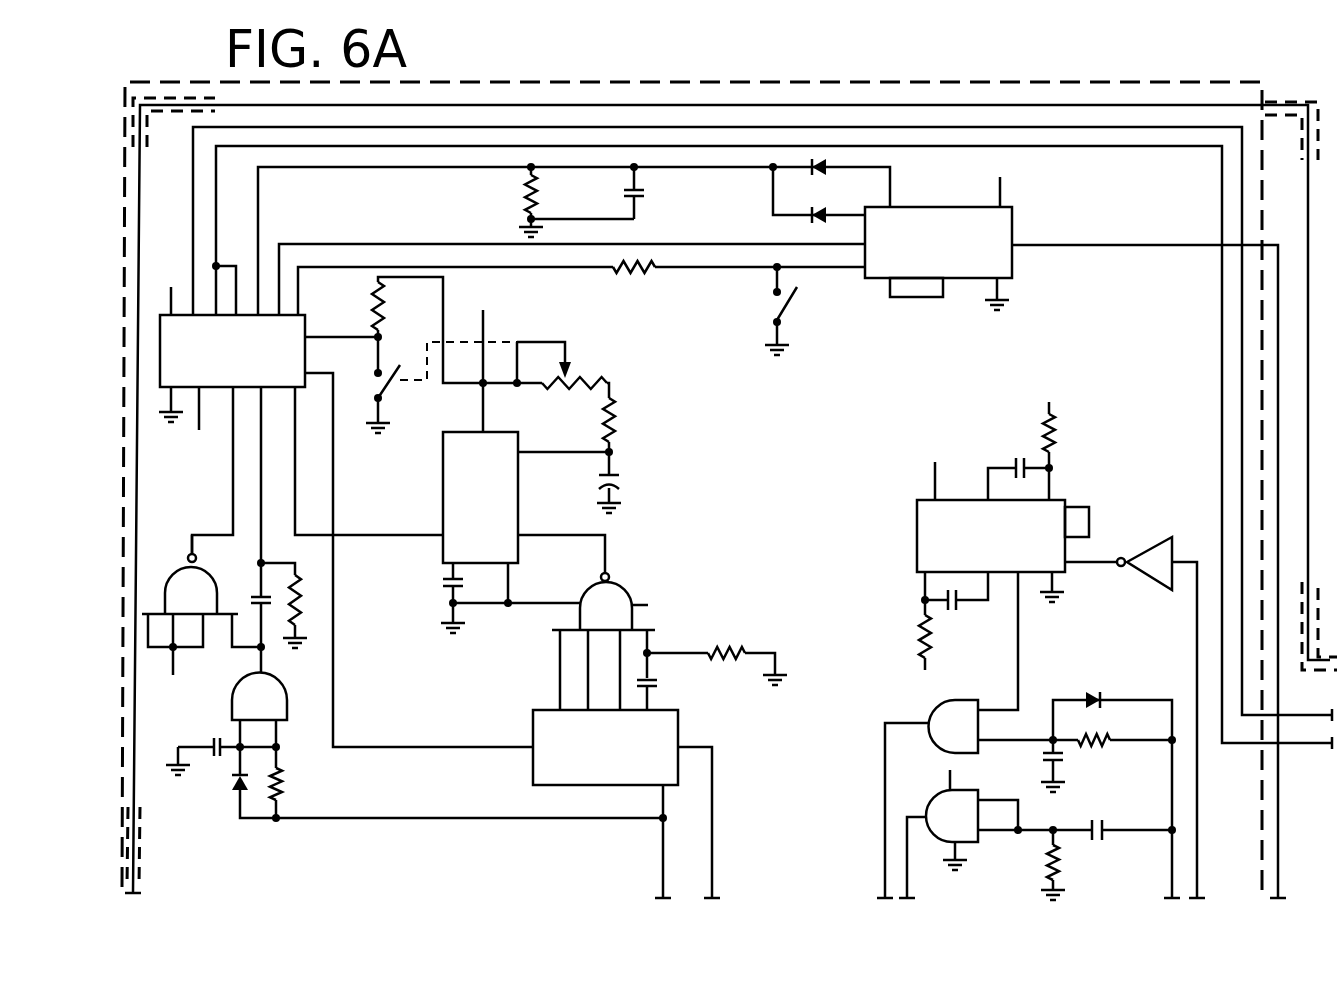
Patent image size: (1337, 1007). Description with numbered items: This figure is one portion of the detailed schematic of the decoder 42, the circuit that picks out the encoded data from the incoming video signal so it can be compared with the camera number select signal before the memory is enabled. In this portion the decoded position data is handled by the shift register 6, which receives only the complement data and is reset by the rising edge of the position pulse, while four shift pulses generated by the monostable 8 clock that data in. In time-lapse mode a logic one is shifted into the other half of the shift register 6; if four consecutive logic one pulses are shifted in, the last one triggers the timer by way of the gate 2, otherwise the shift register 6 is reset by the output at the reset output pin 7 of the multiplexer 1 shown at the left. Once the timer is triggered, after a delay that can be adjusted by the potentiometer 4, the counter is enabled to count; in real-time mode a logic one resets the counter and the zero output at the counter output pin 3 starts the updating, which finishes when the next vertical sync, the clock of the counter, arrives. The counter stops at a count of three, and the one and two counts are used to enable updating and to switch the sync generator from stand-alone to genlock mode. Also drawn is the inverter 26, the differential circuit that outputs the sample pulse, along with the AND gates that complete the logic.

The decoder 42 is at (748, 80).
The U1 1 is at (232, 351).
The U2 2 is at (398, 605).
The pin 3 of U7 3 is at (928, 252).
The R4 4 is at (565, 364).
The U6 6 is at (605, 747).
The pin 7 of U1 7 is at (419, 549).
The U8 8 is at (1003, 536).
The differential circuit U26 26 is at (1144, 555).